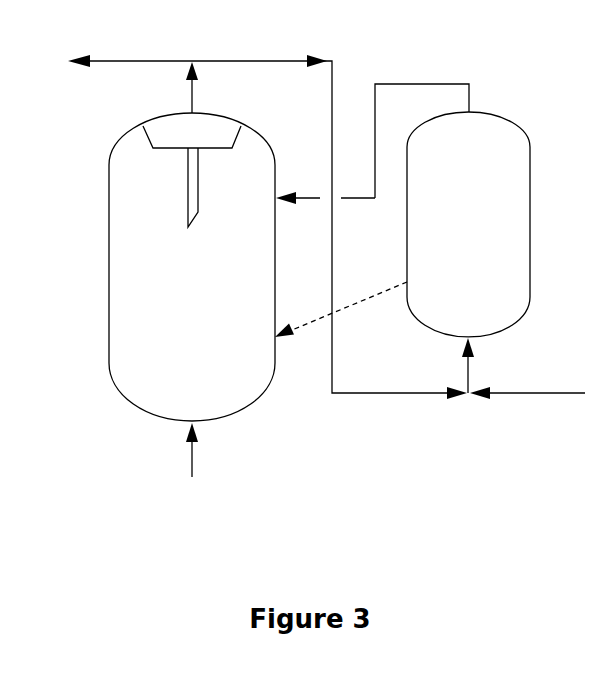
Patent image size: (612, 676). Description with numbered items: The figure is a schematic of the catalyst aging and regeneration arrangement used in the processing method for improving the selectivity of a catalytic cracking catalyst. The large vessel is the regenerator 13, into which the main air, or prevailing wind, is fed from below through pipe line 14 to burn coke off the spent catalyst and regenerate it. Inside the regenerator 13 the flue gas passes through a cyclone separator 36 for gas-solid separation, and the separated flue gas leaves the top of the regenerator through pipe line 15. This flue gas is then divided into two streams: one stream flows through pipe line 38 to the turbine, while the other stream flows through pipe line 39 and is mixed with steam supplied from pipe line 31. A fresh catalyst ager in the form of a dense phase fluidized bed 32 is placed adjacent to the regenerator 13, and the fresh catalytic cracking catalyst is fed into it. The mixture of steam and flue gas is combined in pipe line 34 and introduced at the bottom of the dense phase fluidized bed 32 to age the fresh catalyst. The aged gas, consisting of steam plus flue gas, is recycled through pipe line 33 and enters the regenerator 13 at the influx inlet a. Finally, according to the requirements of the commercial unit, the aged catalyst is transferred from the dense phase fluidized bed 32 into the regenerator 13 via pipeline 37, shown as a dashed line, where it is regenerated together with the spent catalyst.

The regenerator 13 is at (192, 267).
The pipe line 14 is at (205, 450).
The pipe line 15 is at (205, 87).
The pipe line 31 is at (527, 381).
The dense phase fluidized bed 32 is at (468, 224).
The pipe line 33 is at (422, 126).
The pipe line 34 is at (481, 365).
The cyclone separator 36 is at (187, 170).
The pipeline 37 is at (341, 309).
The pipe line 38 is at (130, 49).
The pipe line 39 is at (329, 215).
The influx inlet a is at (325, 189).